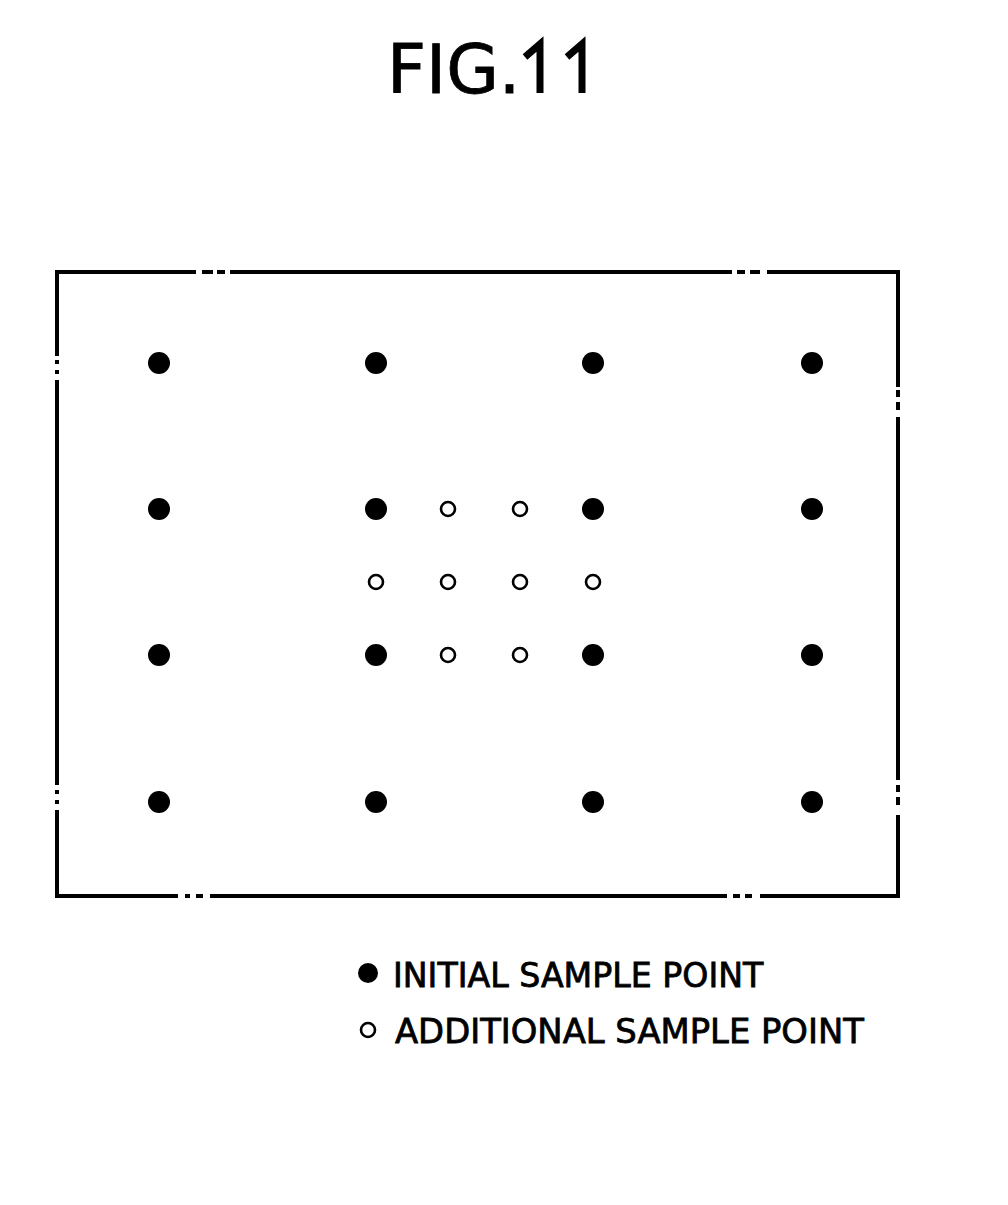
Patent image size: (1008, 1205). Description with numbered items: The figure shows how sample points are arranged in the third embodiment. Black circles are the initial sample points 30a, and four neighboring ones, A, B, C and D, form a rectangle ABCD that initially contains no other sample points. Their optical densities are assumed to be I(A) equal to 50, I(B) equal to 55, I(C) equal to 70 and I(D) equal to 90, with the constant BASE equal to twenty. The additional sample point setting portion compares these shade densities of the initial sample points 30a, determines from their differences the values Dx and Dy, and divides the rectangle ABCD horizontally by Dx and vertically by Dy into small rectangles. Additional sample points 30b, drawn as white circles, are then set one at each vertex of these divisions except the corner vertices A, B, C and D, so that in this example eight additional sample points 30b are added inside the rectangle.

The initial sample points 30a is at (368, 648).
The additional sample points 30b is at (520, 501).
The sample point A value 50 is at (411, 488).
The sample point B value 55 is at (411, 679).
The sample point C value 70 is at (627, 679).
The sample point D value 90 is at (628, 489).